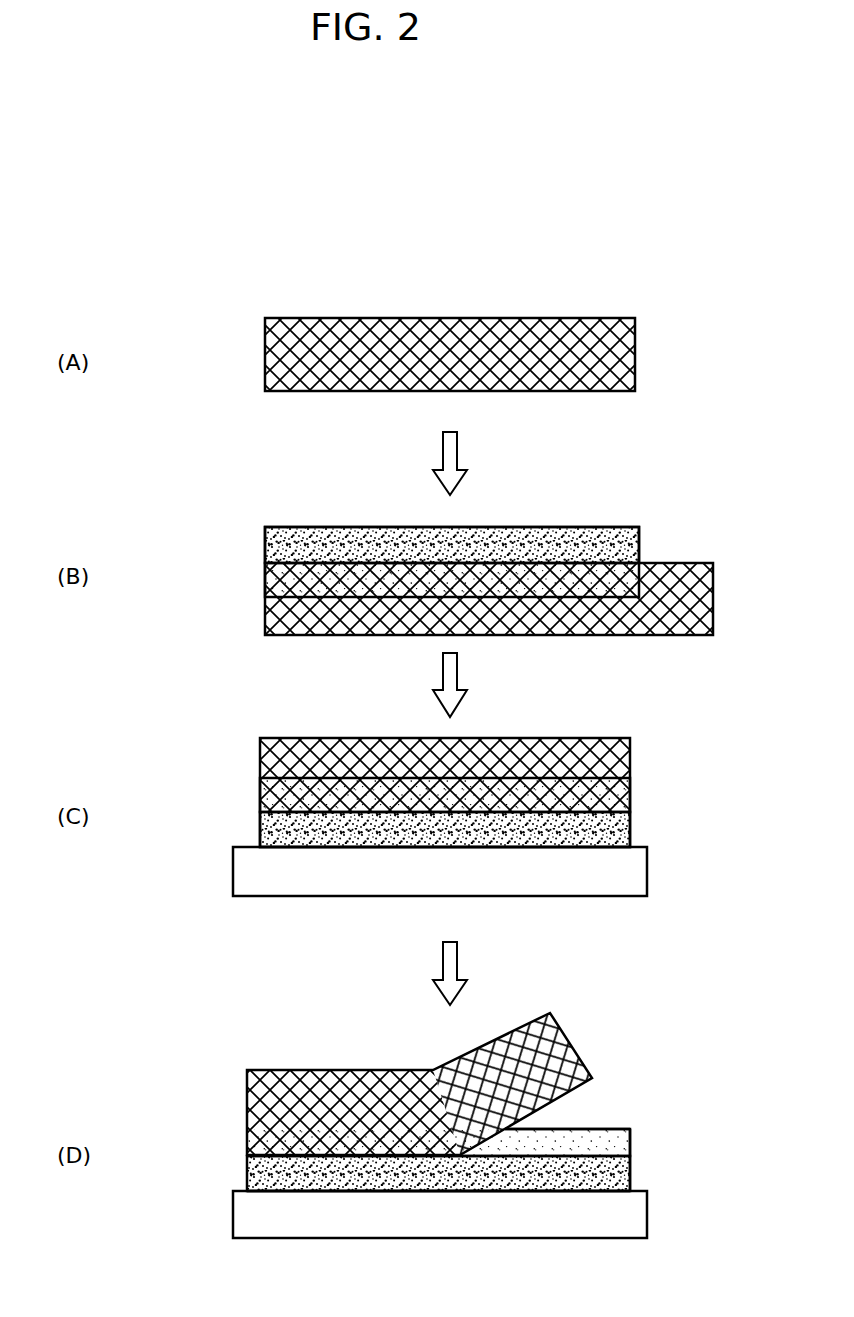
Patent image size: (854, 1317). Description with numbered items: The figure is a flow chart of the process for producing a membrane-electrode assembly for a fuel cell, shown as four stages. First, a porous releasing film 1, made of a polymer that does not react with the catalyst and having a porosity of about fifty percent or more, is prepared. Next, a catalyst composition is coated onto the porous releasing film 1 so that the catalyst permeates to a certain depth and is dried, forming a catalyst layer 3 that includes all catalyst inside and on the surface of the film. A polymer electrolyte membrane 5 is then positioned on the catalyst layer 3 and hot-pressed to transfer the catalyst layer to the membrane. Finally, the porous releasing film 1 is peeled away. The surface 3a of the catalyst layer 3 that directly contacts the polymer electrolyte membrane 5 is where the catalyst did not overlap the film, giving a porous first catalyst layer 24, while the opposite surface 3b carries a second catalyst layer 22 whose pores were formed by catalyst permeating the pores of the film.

The porous releasing film 1 is at (265, 356).
The catalyst layer 3 is at (252, 528).
The polymer electrolyte membrane 5 is at (243, 877).
The second catalyst layer 22 is at (620, 1142).
The first catalyst layer 24 is at (620, 1177).
The surface of the catalyst layer 3a is at (582, 1192).
The opposite surface 3b is at (588, 1129).